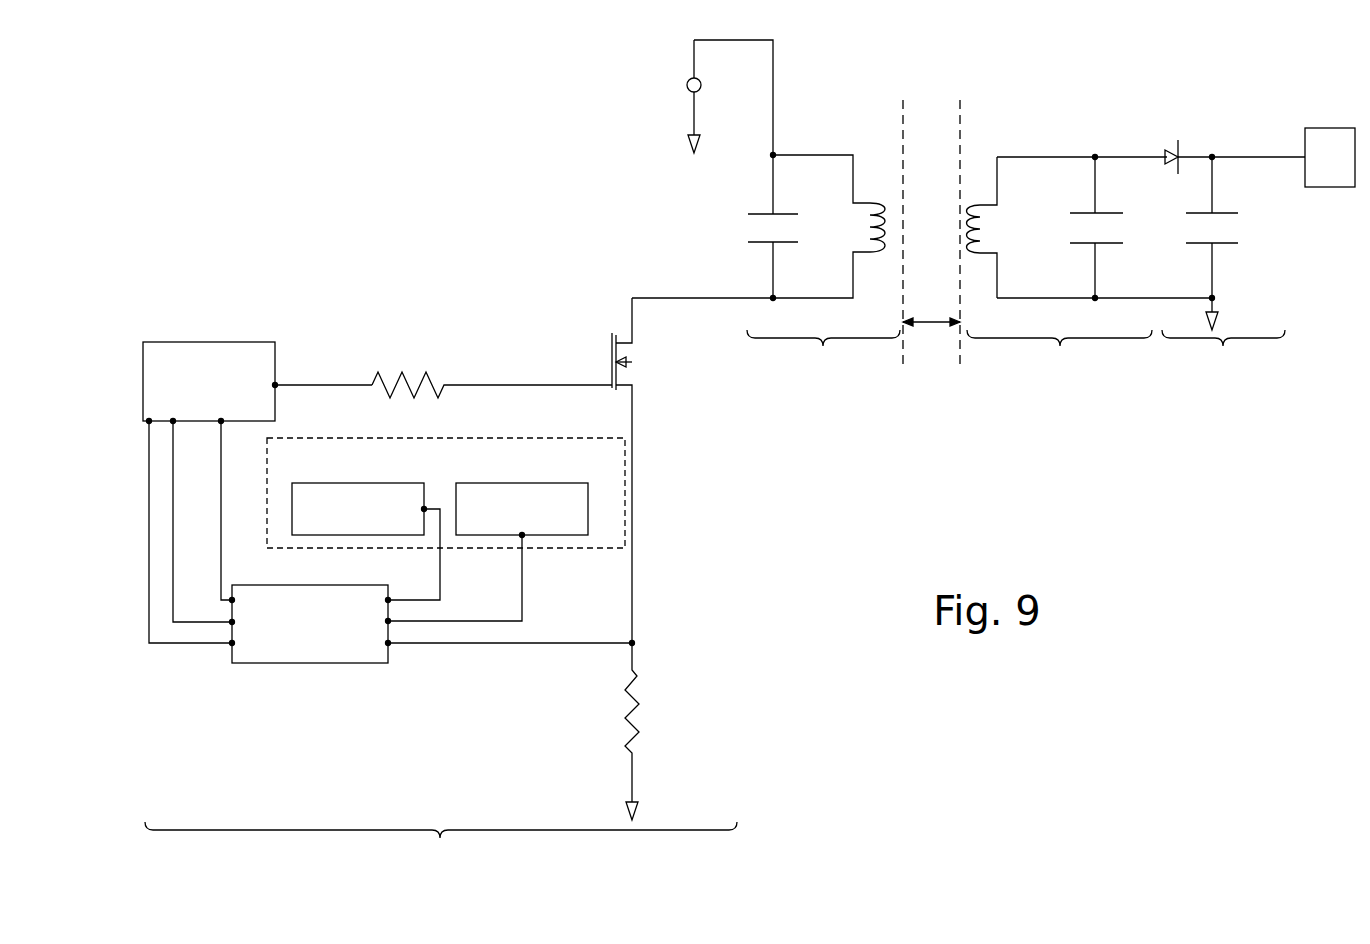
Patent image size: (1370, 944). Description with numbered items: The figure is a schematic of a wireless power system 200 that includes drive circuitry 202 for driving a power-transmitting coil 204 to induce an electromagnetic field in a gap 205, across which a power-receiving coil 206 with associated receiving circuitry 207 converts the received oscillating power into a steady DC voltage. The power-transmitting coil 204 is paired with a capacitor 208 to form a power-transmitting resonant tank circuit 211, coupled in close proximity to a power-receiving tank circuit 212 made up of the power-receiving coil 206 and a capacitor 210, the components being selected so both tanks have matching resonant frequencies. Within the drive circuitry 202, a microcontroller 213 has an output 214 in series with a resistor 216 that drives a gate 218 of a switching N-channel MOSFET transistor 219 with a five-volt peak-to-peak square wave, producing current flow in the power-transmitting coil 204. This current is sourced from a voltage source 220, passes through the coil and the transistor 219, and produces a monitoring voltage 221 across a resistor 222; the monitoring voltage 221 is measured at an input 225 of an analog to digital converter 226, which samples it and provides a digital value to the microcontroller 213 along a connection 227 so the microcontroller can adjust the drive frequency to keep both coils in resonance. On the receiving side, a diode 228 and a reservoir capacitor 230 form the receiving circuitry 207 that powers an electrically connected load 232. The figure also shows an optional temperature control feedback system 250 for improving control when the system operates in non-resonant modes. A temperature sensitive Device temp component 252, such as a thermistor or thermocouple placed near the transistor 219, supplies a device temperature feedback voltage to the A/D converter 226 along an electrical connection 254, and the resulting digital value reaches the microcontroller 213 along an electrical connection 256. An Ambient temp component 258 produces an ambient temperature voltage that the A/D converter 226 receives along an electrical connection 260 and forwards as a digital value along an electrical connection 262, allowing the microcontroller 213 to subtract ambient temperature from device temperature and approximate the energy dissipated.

The wireless power system 200 is at (366, 196).
The drive circuitry 202 is at (441, 827).
The power-transmitting coil 204 is at (872, 215).
The gap 205 is at (930, 325).
The power-receiving coil 206 is at (980, 200).
The associated receiving circuitry 207 is at (1223, 335).
The capacitor 208 is at (790, 226).
The capacitor 210 is at (1102, 215).
The power-transmitting resonant tank circuit 211 is at (823, 351).
The power-receiving tank circuit 212 is at (1059, 351).
The microcontroller 213 is at (227, 342).
The output 214 is at (280, 384).
The resistor 216 is at (402, 362).
The gate 218 is at (611, 388).
The switching N-channel MOSFET transistor 219 is at (634, 362).
The voltage source (Vd) 220 is at (634, 430).
The monitoring voltage (VRsense) 221 is at (602, 715).
The resistor (Rsense) 222 is at (662, 708).
The input 225 is at (600, 640).
The analog to digital converter 226 is at (327, 663).
The connection 227 is at (170, 645).
The diode 228 is at (1182, 150).
The reservoir capacitor 230 is at (1220, 215).
The load 232 is at (1305, 187).
The temperature control feedback system 250 is at (440, 438).
The temperature sensitive electronic component (Device temp) 252 is at (428, 494).
The electrical connection 254 is at (440, 585).
The electrical connection 256 is at (174, 555).
The ambient temperature sensor 258 is at (592, 495).
The electrical connection 260 is at (522, 585).
The electrical connection 262 is at (222, 490).